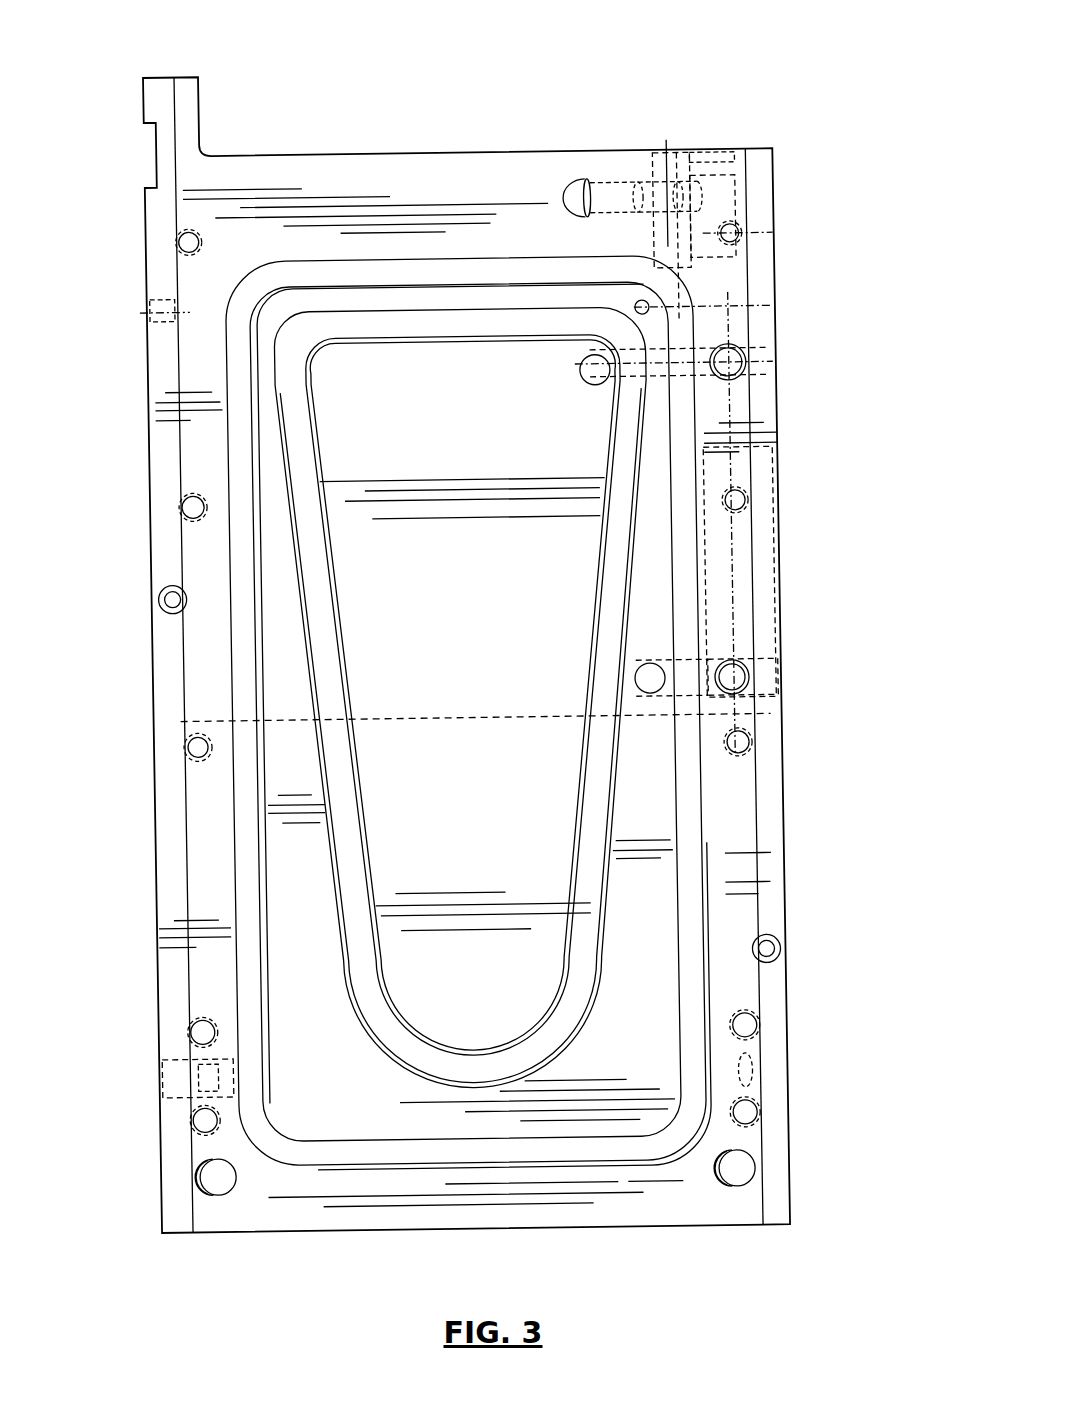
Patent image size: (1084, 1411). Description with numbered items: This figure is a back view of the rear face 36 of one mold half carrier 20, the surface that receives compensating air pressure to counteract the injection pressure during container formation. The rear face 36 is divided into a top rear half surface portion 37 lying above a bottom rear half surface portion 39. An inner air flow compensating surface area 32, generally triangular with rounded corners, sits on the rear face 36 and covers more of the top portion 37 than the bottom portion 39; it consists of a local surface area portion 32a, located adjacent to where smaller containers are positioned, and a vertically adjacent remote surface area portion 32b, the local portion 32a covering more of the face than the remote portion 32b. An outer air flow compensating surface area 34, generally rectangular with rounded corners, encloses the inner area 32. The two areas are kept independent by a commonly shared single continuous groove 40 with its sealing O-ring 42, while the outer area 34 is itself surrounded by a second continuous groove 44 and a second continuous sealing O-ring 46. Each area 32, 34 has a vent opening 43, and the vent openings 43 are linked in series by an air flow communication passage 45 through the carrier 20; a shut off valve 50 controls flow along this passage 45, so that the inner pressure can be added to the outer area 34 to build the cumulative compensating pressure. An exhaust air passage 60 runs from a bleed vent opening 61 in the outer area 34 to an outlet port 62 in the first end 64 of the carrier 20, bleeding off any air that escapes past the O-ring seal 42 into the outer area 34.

The mold half carrier 20 is at (413, 188).
The inner air flow compensating surface area 32 is at (555, 795).
The local surface area portion 32a is at (463, 548).
The remote surface area portion 32b is at (477, 823).
The outer air flow compensating surface area 34 is at (657, 908).
The rear face 36 is at (708, 1200).
The top rear half surface portion 37 is at (202, 658).
The bottom rear half surface portion 39 is at (207, 813).
The single continuous groove 40 is at (333, 865).
The sealing O-ring 42 is at (357, 935).
The vent opening 43 is at (582, 378).
The second continuous groove 44 is at (605, 1160).
The air flow communication passage 45 is at (700, 398).
The second continuous sealing O-ring 46 is at (650, 1143).
The shut off valve 50 is at (735, 273).
The exhaust air passage 60 is at (778, 323).
The bleed vent opening 61 is at (655, 305).
The outlet port 62 is at (710, 150).
The first end 64 is at (562, 152).